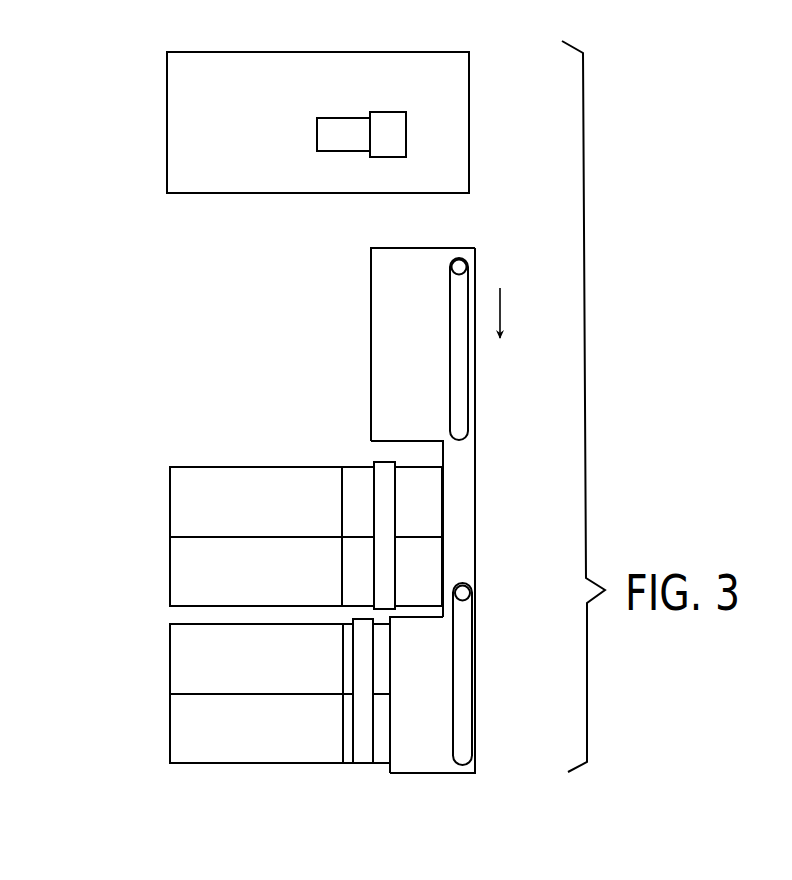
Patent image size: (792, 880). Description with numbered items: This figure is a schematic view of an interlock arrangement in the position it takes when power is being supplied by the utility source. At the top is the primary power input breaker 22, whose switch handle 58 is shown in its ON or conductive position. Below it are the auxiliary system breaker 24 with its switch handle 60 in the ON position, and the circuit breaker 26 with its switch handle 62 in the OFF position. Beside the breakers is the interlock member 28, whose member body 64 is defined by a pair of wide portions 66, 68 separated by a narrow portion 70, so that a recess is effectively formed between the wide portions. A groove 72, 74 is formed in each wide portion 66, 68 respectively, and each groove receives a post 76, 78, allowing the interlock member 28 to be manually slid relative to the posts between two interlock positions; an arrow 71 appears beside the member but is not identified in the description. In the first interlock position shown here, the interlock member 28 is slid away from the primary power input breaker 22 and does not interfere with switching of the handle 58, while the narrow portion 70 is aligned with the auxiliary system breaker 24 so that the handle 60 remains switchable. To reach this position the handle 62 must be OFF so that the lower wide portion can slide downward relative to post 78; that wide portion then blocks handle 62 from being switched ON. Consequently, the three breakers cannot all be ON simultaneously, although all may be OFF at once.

The primary power input breaker 22 is at (479, 121).
The switch handle 58 is at (388, 122).
The auxiliary system breaker 24 is at (212, 464).
The circuit breaker 26 is at (166, 738).
The interlock member 28 is at (469, 500).
The switch handle 60 is at (380, 492).
The switch handle 62 is at (362, 755).
The member body 64 is at (477, 556).
The wide portion 66 is at (430, 362).
The wide portion 68 is at (440, 716).
The narrow portion 70 is at (475, 536).
The direction of insertion 71 is at (426, 455).
The groove 72 is at (462, 414).
The groove 74 is at (465, 718).
The post 76 is at (465, 262).
The post 78 is at (468, 592).